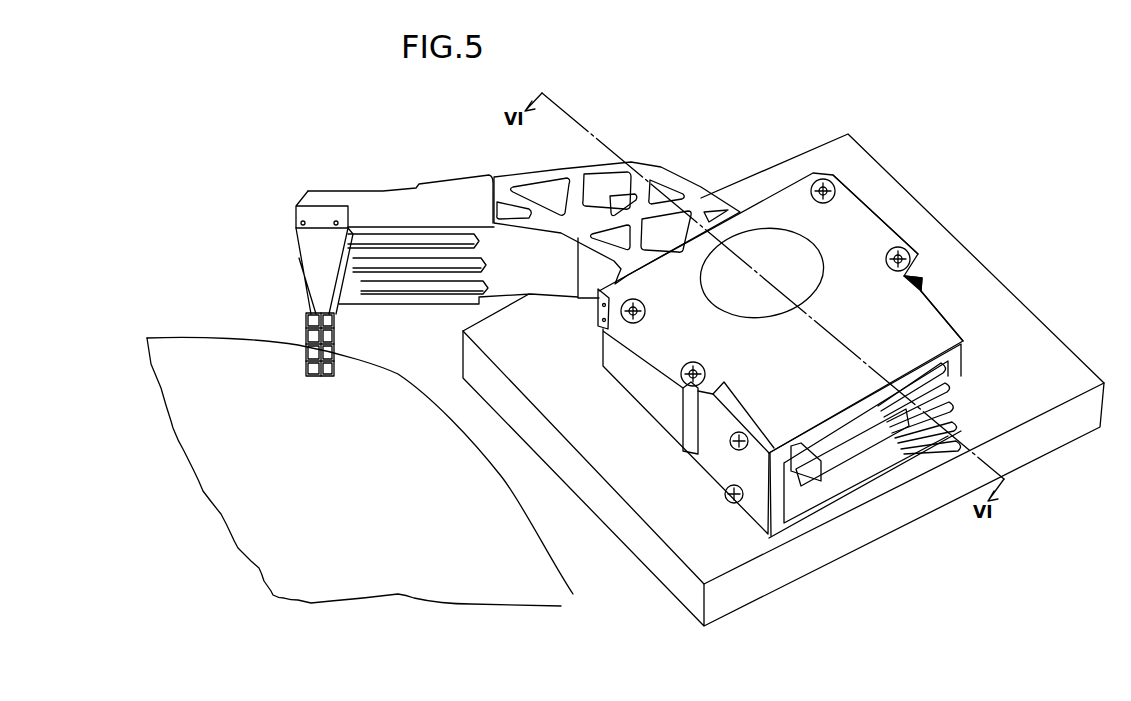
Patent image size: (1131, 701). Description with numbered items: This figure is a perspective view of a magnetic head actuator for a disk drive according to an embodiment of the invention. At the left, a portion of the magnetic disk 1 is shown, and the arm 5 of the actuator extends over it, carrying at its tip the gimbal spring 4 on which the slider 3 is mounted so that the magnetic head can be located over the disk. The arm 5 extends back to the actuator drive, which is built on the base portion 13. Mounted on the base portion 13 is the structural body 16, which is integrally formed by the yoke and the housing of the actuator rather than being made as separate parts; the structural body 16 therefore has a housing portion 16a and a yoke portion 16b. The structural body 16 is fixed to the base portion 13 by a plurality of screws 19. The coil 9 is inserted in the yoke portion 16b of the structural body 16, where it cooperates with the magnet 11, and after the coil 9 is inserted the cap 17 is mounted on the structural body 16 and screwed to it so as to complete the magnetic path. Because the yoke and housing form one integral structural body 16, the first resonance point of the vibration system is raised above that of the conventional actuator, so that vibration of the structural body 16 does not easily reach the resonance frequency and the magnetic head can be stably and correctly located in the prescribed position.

The magnetic disk 1 is at (568, 603).
The slider 3 is at (318, 377).
The gimbal spring 4 is at (298, 227).
The arm 5 is at (445, 187).
The coil 9 is at (950, 362).
The magnet 11 is at (823, 490).
The base portion 13 is at (900, 503).
The structural body 16 is at (888, 207).
The housing portion 16a is at (878, 243).
The yoke portion 16b is at (947, 337).
The cap 17 is at (753, 502).
The screws 19 is at (838, 180).